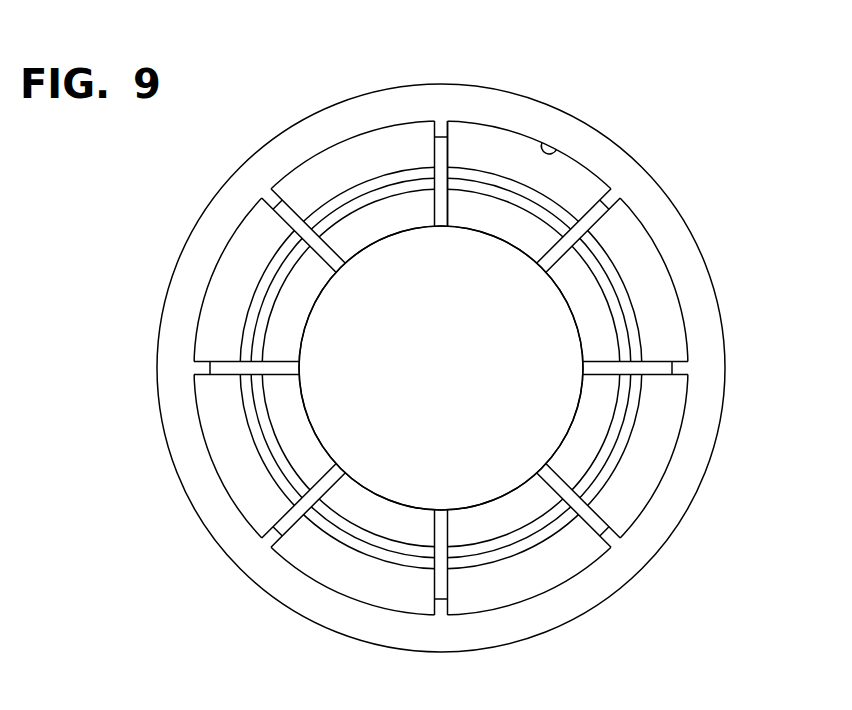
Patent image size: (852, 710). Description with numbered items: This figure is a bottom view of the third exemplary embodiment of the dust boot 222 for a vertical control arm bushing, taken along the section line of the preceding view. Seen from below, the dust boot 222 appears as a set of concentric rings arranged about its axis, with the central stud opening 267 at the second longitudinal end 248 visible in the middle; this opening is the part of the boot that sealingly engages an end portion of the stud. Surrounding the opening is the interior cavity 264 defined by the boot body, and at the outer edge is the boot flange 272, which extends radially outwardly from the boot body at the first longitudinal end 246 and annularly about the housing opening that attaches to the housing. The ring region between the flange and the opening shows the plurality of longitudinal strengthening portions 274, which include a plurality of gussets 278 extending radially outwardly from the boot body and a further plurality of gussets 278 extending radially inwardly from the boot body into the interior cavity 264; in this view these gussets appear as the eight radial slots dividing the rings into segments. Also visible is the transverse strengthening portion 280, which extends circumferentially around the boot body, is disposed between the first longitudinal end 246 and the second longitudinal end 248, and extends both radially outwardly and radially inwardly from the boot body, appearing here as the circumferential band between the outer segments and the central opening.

The dust boot 222 is at (656, 553).
The first longitudinal end 246 is at (680, 448).
The second longitudinal end 248 is at (573, 313).
The interior cavity 264 is at (549, 152).
The stud opening 267 is at (315, 430).
The boot flange 272 is at (660, 222).
The longitudinal strengthening portions 274 is at (455, 146).
The gussets 278 is at (445, 130).
The transverse strengthening portion 280 is at (273, 287).